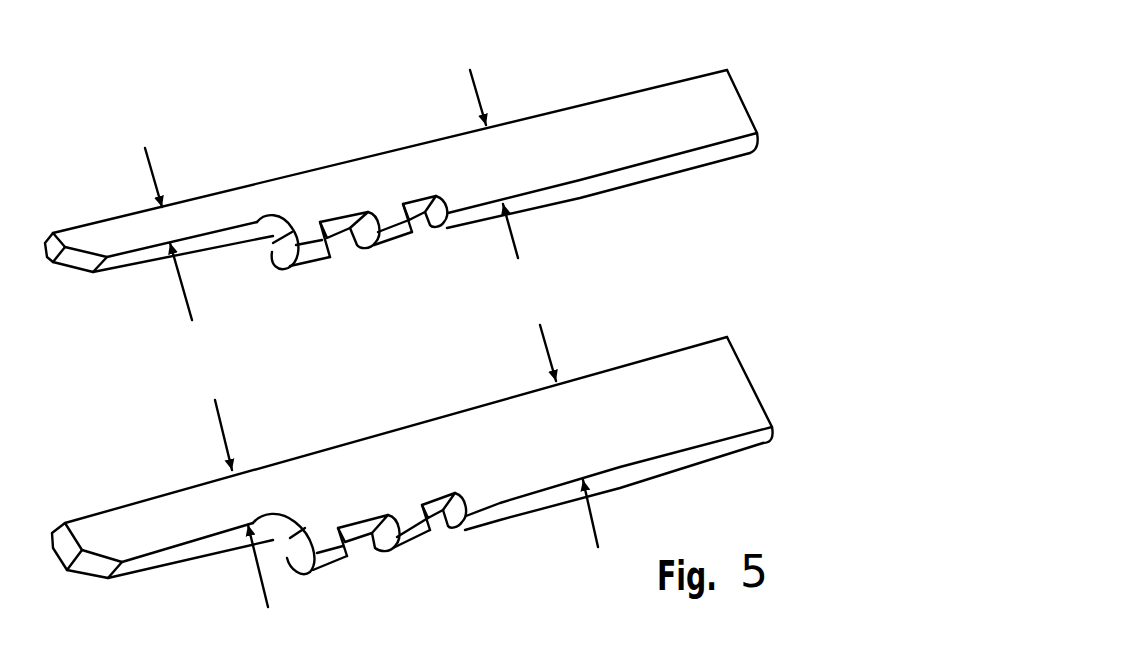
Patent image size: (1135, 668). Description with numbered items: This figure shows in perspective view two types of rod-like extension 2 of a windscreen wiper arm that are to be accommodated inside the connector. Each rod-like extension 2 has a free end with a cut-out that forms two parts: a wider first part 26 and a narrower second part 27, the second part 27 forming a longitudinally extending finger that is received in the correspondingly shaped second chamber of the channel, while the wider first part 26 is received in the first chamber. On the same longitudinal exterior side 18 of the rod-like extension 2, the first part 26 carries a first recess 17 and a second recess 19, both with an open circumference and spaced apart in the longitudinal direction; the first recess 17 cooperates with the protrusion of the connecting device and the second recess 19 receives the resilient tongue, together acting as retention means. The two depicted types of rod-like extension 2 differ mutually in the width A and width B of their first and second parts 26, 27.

The rod-like extension 2 is at (680, 97).
The first recess 17 is at (423, 235).
The longitudinal exterior side 18 is at (688, 165).
The second recess 19 is at (347, 243).
The first part 26 is at (582, 118).
The second part 27 is at (222, 205).
The width A is at (206, 353).
The width B is at (534, 283).